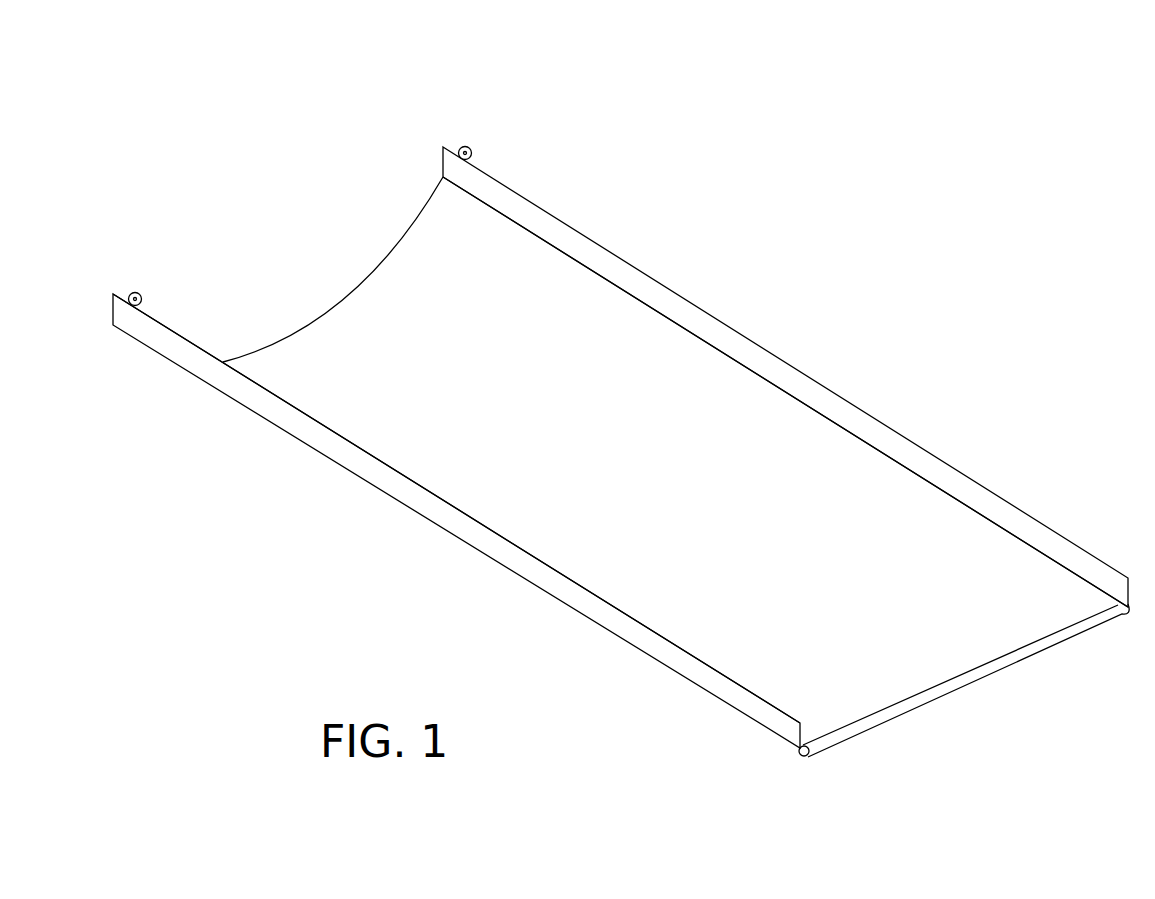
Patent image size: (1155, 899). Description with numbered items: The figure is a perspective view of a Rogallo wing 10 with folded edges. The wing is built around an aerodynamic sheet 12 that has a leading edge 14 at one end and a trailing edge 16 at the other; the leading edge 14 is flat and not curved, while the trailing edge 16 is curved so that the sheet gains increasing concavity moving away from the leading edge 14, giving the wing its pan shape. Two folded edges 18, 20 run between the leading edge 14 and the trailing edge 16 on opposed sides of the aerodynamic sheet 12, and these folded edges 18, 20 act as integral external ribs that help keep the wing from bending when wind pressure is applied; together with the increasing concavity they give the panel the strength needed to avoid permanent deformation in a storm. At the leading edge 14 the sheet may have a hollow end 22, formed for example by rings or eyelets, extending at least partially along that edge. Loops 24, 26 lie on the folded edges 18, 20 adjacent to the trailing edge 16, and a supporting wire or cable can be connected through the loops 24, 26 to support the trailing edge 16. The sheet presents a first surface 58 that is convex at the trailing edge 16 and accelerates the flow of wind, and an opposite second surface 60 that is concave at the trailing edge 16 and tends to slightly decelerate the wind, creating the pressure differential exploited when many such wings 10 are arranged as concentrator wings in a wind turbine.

The Rogallo wing 10 is at (898, 312).
The aerodynamic sheet 12 is at (640, 452).
The leading edge 14 is at (930, 702).
The trailing edge 16 is at (353, 297).
The folded edge 18 is at (300, 410).
The folded edge 20 is at (563, 221).
The hollow end 22 is at (804, 757).
The loop 24 is at (140, 292).
The loop 26 is at (466, 147).
The first surface 58 is at (228, 415).
The second surface 60 is at (403, 314).